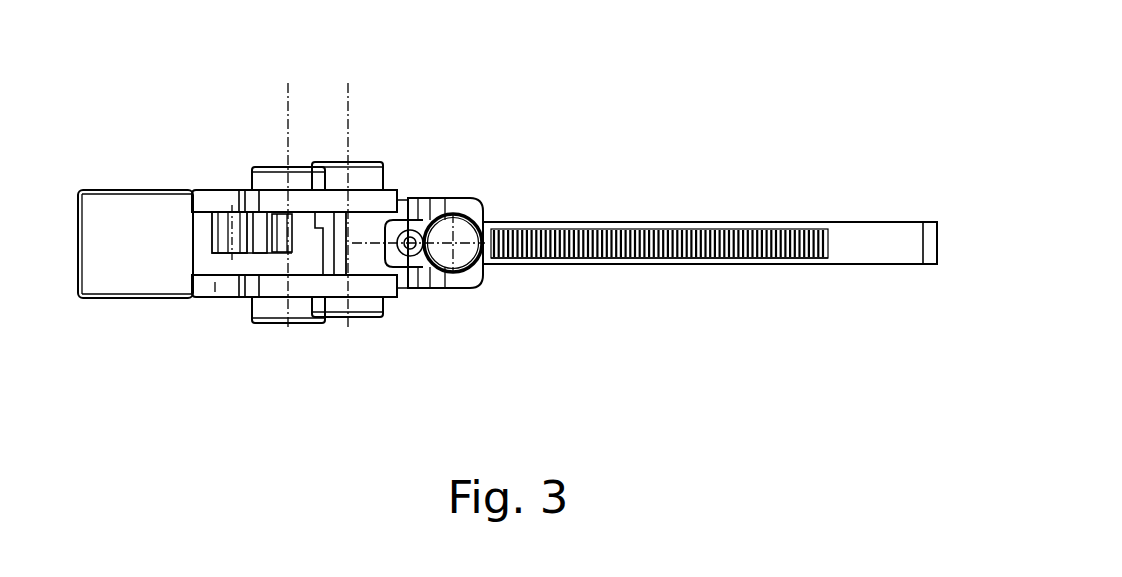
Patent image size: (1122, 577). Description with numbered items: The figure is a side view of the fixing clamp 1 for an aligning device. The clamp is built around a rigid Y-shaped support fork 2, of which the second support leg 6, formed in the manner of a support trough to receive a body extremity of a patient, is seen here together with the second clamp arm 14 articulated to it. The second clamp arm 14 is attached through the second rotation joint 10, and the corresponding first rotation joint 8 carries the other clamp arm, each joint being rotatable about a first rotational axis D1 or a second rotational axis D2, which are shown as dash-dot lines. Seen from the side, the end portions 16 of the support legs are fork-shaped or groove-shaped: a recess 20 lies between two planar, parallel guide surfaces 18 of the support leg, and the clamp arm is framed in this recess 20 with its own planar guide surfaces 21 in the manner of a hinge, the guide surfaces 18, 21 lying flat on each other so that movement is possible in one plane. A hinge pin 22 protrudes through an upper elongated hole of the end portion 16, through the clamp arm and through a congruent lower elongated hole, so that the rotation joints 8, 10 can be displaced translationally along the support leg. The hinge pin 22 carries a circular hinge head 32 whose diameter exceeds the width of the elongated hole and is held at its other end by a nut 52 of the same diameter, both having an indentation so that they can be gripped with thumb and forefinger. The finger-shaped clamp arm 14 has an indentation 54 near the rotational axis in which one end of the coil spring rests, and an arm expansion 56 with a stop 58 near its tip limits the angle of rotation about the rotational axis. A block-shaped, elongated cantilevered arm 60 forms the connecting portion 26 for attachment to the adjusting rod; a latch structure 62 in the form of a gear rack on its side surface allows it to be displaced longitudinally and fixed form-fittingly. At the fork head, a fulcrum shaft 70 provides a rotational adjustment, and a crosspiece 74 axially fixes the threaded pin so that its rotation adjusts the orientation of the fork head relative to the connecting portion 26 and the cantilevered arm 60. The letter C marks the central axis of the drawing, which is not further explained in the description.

The fixing clamp 1 is at (100, 90).
The support fork 2 is at (482, 185).
The second support leg 6 is at (398, 288).
The first rotation joint 8 is at (376, 318).
The second rotation joint 10 is at (308, 335).
The second clamp arm 14 is at (108, 265).
The end portions 16 is at (262, 320).
The guide surfaces 18 is at (391, 187).
The recess 20 is at (333, 270).
The guide surfaces 21 is at (240, 190).
The hinge pin 22 is at (300, 172).
The connecting portion 26 is at (670, 135).
The hinge head 32 is at (280, 180).
The nut 52 is at (210, 198).
The indentation 54 is at (212, 240).
The arm expansion 56 is at (122, 189).
The stop 58 is at (215, 283).
The cantilevered arm 60 is at (710, 222).
The latch structure 62 is at (762, 260).
The fulcrum shaft 70 is at (478, 270).
The crosspiece 74 is at (464, 262).
The center axis C is at (372, 214).
The first rotational axis D1 is at (348, 96).
The second rotational axis D2 is at (288, 96).